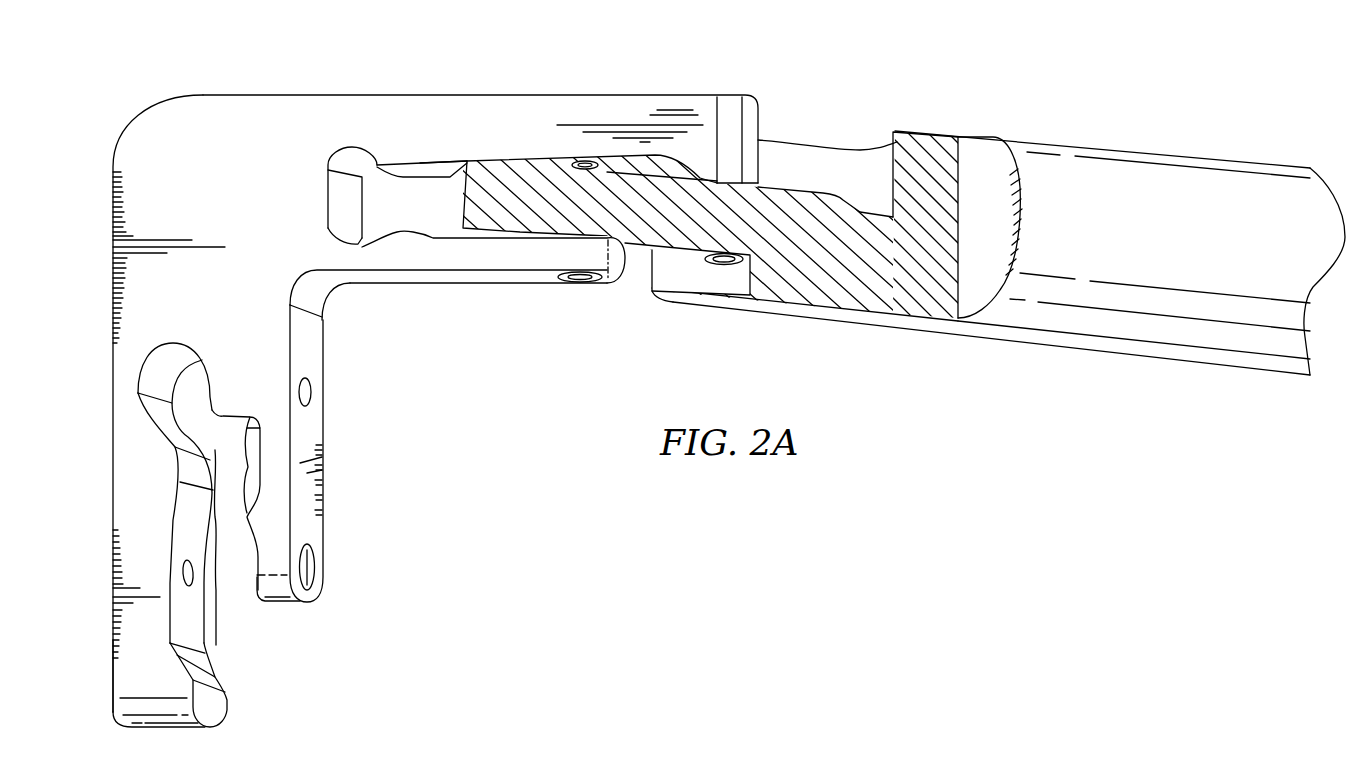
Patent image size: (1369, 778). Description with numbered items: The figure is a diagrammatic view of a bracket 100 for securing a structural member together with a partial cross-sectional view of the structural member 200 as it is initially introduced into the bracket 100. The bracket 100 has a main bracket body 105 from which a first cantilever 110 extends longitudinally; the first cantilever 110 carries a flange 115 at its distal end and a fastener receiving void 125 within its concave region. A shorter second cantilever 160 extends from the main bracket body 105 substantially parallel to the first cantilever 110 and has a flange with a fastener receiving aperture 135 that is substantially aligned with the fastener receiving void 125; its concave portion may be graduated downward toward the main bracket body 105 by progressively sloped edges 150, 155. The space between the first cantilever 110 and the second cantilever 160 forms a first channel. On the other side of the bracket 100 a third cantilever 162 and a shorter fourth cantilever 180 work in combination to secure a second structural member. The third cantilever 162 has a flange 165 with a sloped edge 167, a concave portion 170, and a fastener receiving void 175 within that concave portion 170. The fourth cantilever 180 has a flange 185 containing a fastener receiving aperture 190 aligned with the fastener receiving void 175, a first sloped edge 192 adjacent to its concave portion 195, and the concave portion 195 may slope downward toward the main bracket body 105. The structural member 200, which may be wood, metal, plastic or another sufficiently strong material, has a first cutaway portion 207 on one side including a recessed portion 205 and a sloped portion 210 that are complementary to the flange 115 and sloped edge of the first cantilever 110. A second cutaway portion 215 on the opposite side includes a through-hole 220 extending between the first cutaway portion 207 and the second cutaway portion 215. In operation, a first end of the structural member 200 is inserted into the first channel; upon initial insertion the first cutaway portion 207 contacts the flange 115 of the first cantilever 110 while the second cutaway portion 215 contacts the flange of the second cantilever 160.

The bracket 100 is at (426, 377).
The main bracket body 105 is at (163, 102).
The first cantilever 110 is at (480, 93).
The flange 115 is at (750, 190).
The fastener receiving void 125 is at (560, 170).
The fastener receiving aperture 135 is at (578, 283).
The first sloped edge 150 is at (500, 238).
The sloped edge 155 is at (362, 245).
The second cantilever 160 is at (448, 299).
The third cantilever 162 is at (115, 679).
The flange 165 is at (223, 700).
The sloped edge 167 is at (216, 676).
The concave portion 170 is at (213, 535).
The fastener receiving void 175 is at (211, 535).
The fourth cantilever 180 is at (347, 453).
The flange 185 is at (258, 595).
The fastener receiving aperture 190 is at (318, 564).
The first sloped edge 192 is at (238, 516).
The concave portion 195 is at (247, 472).
The structural member 200 is at (1073, 143).
The recessed portion 205 is at (880, 210).
The first cutaway portion 207 is at (770, 187).
The sloped portion 210 is at (842, 205).
The second cutaway portion 215 is at (672, 313).
The through-hole 220 is at (723, 263).